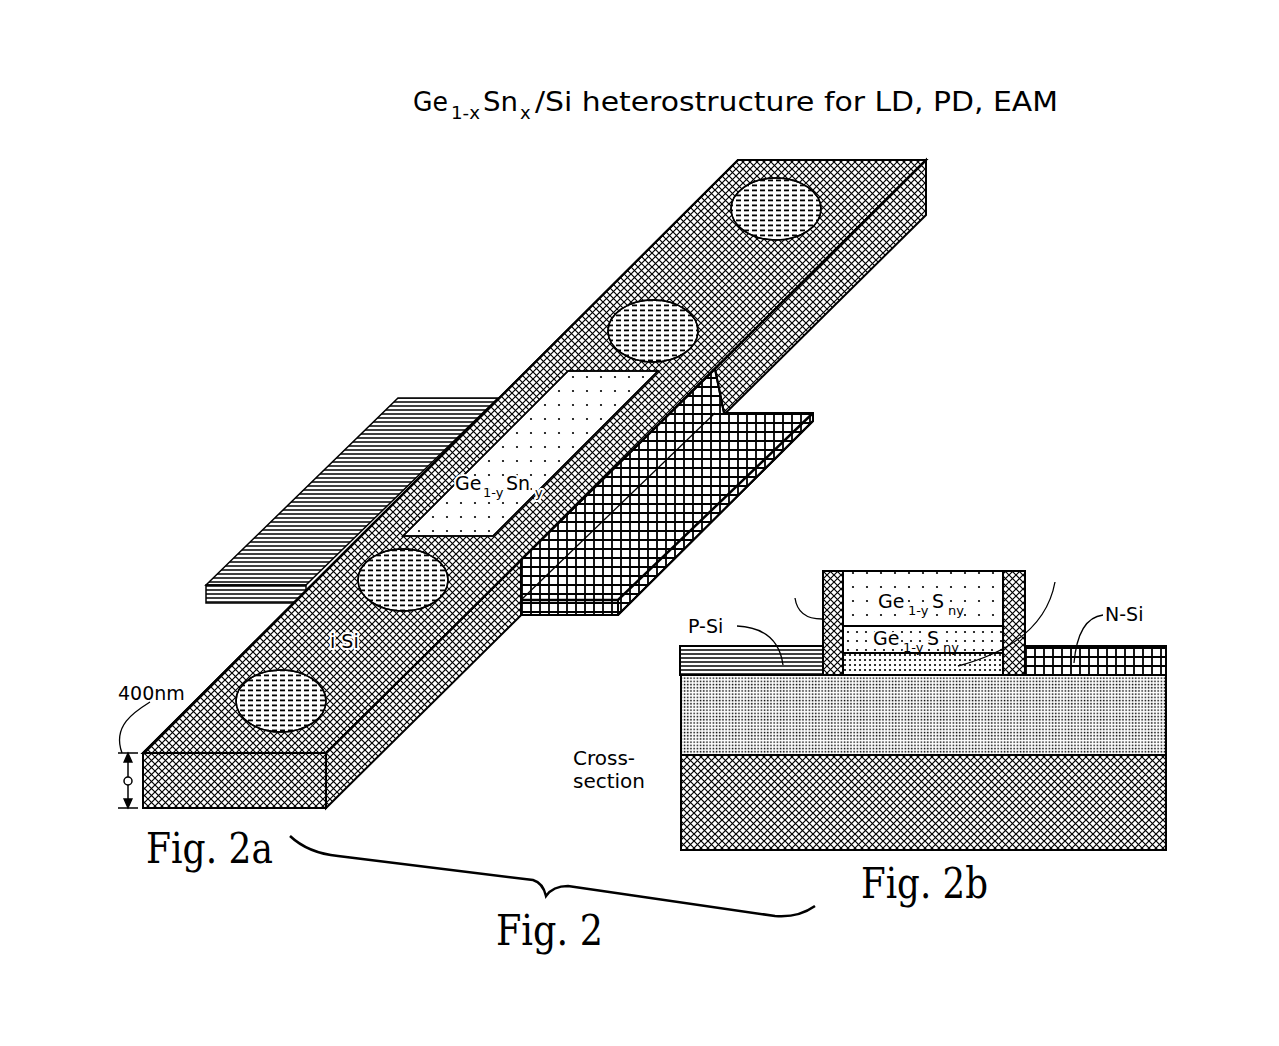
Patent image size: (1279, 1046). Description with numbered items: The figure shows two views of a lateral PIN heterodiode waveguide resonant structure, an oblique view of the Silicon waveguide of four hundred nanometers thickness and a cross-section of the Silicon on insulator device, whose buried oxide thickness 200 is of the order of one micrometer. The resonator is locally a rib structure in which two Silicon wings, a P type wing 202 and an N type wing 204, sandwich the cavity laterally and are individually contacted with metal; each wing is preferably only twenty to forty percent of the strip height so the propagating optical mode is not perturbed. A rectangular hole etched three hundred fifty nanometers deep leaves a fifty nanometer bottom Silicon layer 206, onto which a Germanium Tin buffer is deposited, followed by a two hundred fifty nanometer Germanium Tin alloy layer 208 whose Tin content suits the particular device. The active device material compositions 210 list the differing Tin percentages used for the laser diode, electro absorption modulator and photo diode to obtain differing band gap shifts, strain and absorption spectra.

In FIG. 2B, the buried oxide thickness 200 is at (1159, 709).
In FIG. 2A, the P type Silicon wing 202 is at (416, 390).
In FIG. 2A, the N type Silicon wing 204 is at (774, 404).
In FIG. 2B, the bottom Silicon layer 206 is at (1064, 563).
In FIG. 2B, the Germanium Tin alloy layer 208 is at (771, 576).
In FIG. 2A, the active device material compositions 210 is at (1046, 249).